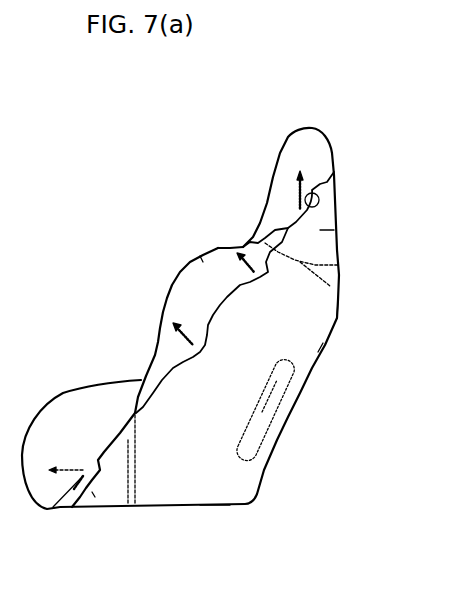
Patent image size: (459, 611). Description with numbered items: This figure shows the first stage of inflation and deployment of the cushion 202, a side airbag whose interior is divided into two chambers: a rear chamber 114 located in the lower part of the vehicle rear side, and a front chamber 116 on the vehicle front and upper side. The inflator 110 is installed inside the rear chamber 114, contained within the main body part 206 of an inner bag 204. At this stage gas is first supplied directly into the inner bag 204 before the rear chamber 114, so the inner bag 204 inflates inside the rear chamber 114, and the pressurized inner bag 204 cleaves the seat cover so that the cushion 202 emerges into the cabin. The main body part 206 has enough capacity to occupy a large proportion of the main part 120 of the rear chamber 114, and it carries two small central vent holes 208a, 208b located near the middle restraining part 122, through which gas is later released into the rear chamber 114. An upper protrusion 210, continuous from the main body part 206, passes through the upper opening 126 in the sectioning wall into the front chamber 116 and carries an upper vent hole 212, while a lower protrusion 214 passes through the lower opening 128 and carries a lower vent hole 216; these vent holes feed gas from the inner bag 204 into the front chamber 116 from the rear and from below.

The cushion 202 is at (151, 184).
The front chamber 116 is at (287, 143).
The inner bag 204 is at (223, 300).
The middle restraining part 122 is at (203, 255).
The central vent hole 208a is at (240, 248).
The central vent hole 208b is at (190, 339).
The upper vent hole 212 is at (333, 200).
The upper protrusion 210 is at (334, 230).
The upper opening 126 is at (340, 265).
The main part 120 is at (338, 318).
The rear chamber 114 is at (323, 343).
The inflator 110 is at (287, 417).
The lower opening 128 is at (128, 443).
The lower vent hole 216 is at (80, 472).
The lower protrusion 214 is at (95, 497).
The main body part 206 is at (213, 505).